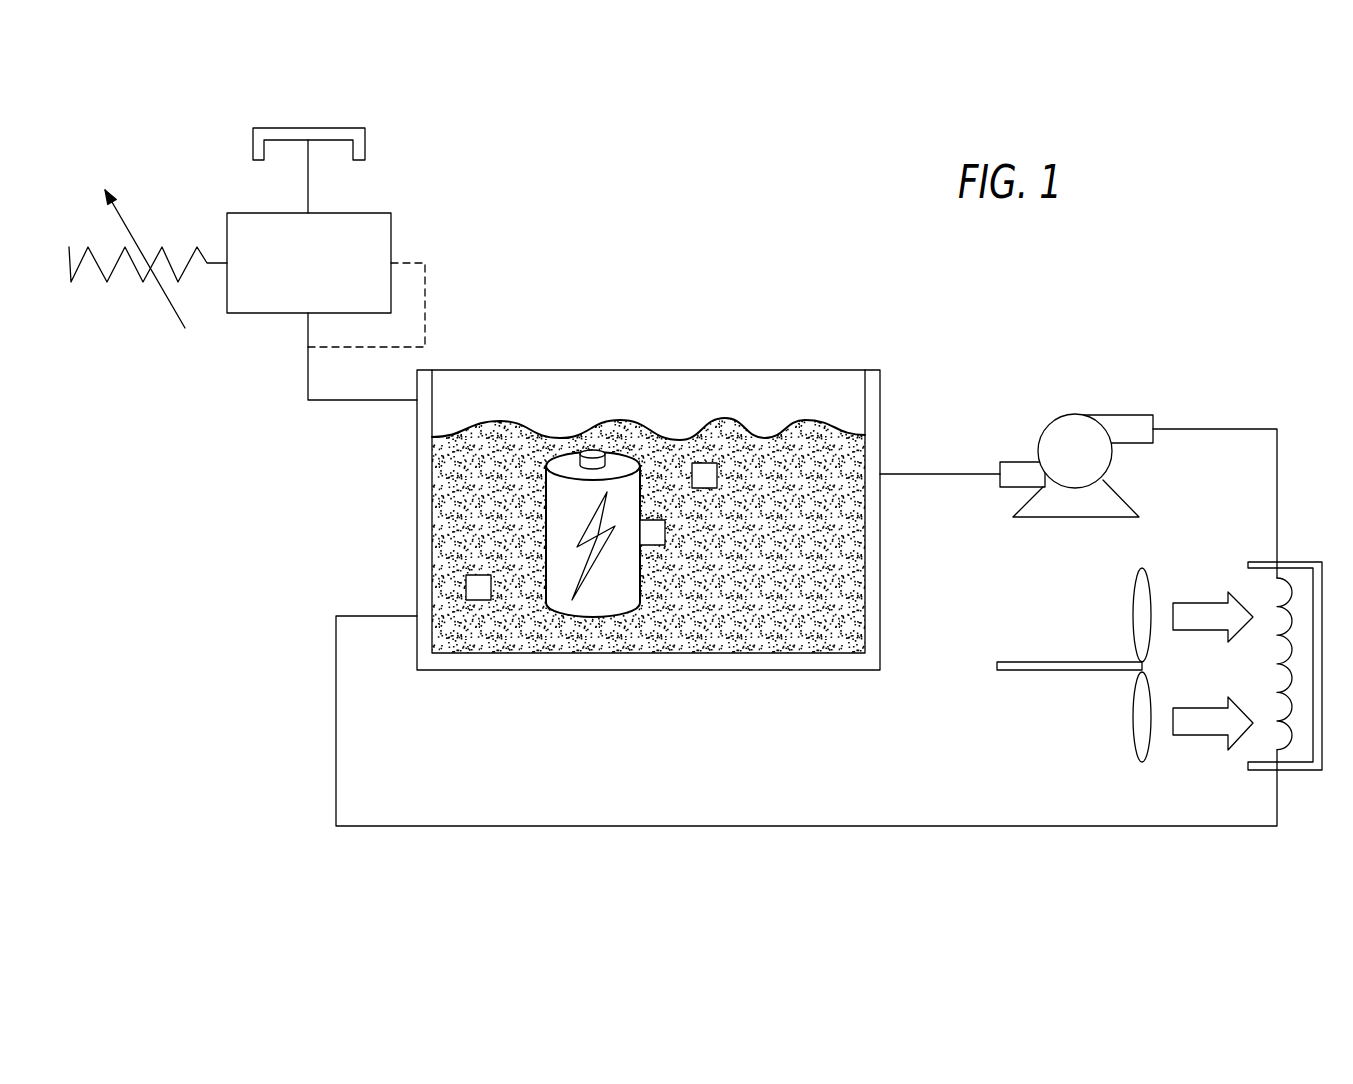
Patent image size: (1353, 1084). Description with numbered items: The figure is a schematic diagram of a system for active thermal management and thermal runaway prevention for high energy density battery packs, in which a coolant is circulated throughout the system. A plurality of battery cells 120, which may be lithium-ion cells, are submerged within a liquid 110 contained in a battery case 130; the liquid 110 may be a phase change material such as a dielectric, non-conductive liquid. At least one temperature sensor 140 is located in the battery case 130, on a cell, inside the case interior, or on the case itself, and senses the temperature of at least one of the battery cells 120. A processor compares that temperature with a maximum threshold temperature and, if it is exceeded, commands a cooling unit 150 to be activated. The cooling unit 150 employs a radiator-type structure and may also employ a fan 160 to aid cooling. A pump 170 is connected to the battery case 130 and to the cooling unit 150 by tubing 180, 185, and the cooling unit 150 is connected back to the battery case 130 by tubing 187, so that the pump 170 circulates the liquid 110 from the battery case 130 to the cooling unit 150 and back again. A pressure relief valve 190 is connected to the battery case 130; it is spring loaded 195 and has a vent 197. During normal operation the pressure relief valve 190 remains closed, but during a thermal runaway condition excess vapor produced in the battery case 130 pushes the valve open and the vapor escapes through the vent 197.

The liquid 110 is at (486, 474).
The battery cells 120 is at (565, 465).
The battery case 130 is at (416, 520).
The temperature sensor 140 is at (705, 463).
The cooling unit 150 is at (1305, 770).
The fan 160 is at (1130, 665).
The pump 170 is at (1068, 440).
The tubing 180 is at (933, 474).
The tubing 185 is at (1218, 429).
The tubing 187 is at (550, 826).
The pressure relief valve 190 is at (391, 233).
The spring 195 is at (148, 280).
The vent 197 is at (365, 145).